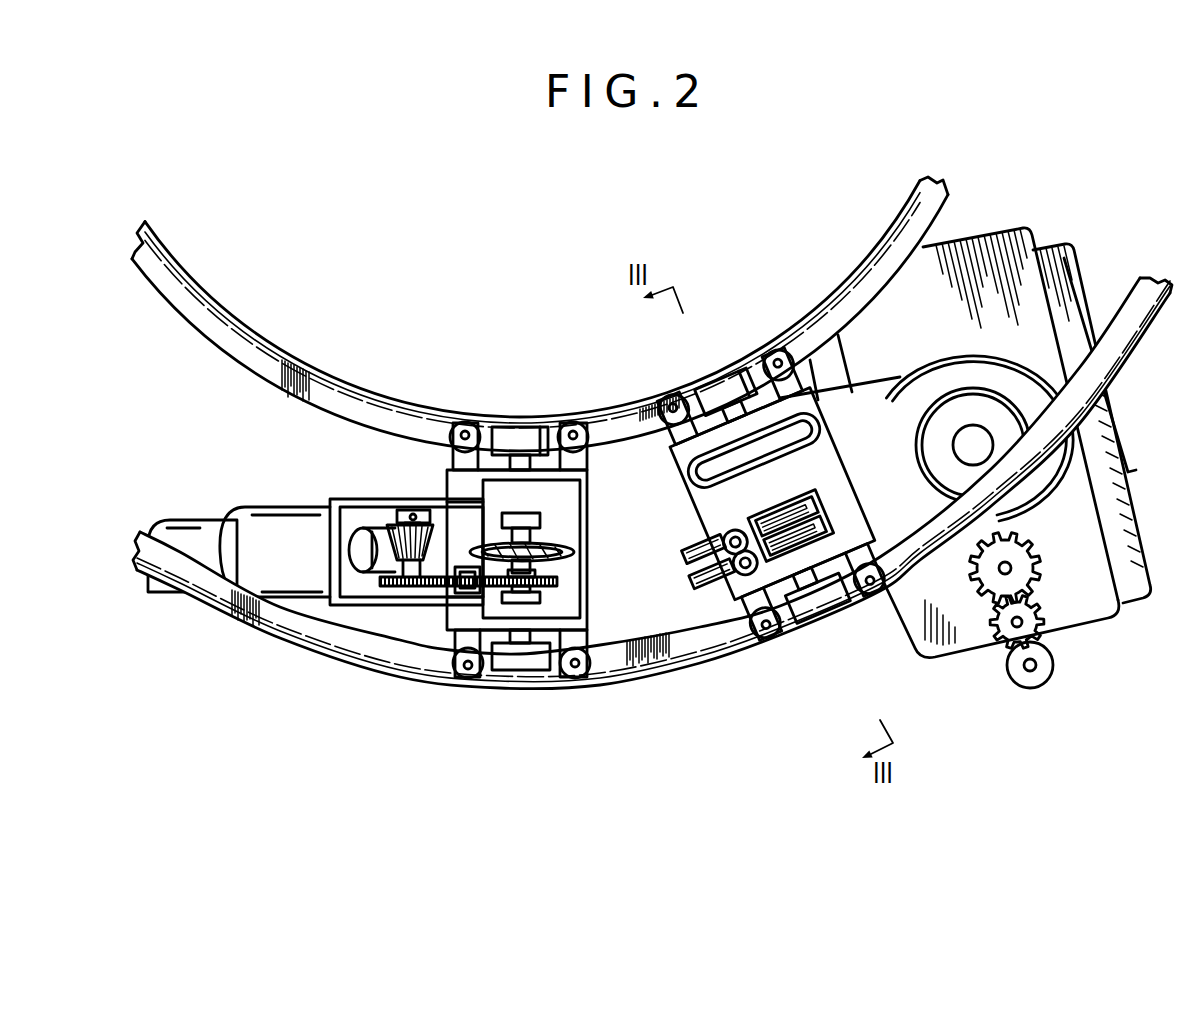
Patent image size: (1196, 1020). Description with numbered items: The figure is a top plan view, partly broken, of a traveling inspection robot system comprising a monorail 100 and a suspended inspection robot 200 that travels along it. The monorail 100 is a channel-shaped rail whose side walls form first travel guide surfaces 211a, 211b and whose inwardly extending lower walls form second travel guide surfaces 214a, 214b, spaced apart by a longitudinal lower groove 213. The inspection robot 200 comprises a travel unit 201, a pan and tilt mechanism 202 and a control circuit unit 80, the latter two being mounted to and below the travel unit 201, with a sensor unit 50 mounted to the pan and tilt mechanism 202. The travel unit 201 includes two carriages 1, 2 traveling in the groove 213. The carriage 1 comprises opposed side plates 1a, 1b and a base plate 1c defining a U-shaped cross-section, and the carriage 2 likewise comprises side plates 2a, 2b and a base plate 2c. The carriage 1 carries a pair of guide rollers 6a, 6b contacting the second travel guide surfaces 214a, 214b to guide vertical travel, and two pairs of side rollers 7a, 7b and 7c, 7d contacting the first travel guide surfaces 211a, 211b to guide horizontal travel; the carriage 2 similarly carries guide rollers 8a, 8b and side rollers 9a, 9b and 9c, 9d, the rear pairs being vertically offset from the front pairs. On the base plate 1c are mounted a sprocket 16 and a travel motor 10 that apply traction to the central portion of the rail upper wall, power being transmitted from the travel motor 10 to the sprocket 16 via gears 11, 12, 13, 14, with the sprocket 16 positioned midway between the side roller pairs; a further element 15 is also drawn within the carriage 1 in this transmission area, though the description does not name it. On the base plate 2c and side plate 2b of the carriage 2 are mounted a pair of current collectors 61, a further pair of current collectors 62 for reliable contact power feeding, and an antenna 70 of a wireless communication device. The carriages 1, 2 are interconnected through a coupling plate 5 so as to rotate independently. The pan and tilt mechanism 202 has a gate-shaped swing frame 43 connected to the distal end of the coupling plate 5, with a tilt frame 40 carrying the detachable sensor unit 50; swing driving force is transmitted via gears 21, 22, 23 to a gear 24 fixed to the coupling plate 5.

The carriage 1 is at (572, 505).
The side plate 1a is at (537, 470).
The side plate 1b is at (500, 672).
The base plate 1c is at (563, 525).
The carriage 2 is at (820, 464).
The side plate 2a is at (733, 370).
The side plate 2b is at (840, 615).
The base plate 2c is at (838, 398).
The coupling plate 5 is at (635, 655).
The guide roller 6a is at (517, 440).
The guide roller 6b is at (523, 668).
The side roller 7a is at (457, 415).
The side roller 7b is at (473, 687).
The side roller 7c is at (590, 682).
The side roller 7d is at (567, 413).
The guide roller 8a is at (720, 397).
The guide roller 8b is at (817, 622).
The side roller 9a is at (657, 402).
The side roller 9b is at (770, 645).
The side roller 9c is at (867, 631).
The side roller 9d is at (760, 347).
The travel motor 10 is at (285, 525).
The gear 11 is at (365, 545).
The gear 12 is at (402, 525).
The gear 13 is at (440, 590).
The gear 14 is at (432, 598).
The worm gear 15 is at (557, 580).
The sprocket 16 is at (483, 527).
The gear 21 is at (1023, 677).
The gear 22 is at (1035, 618).
The gear 23 is at (1020, 576).
The gear 24 is at (1037, 512).
The tilt frame 40 is at (1113, 528).
The swing frame 43 is at (1000, 230).
The sensor unit 50 is at (1108, 447).
The current collectors 61 is at (830, 527).
The current collectors 62 is at (695, 568).
The antenna 70 is at (717, 473).
The control circuit unit 80 is at (208, 533).
The monorail 100 is at (285, 341).
The inspection robot 200 is at (1108, 220).
The travel unit 201 is at (722, 614).
The pan and tilt mechanism 202 is at (1086, 653).
The first travel guide surface 211a is at (360, 388).
The first travel guide surface 211b is at (299, 632).
The longitudinal lower groove 213 is at (316, 457).
The second travel guide surface 214a is at (602, 412).
The second travel guide surface 214b is at (633, 665).